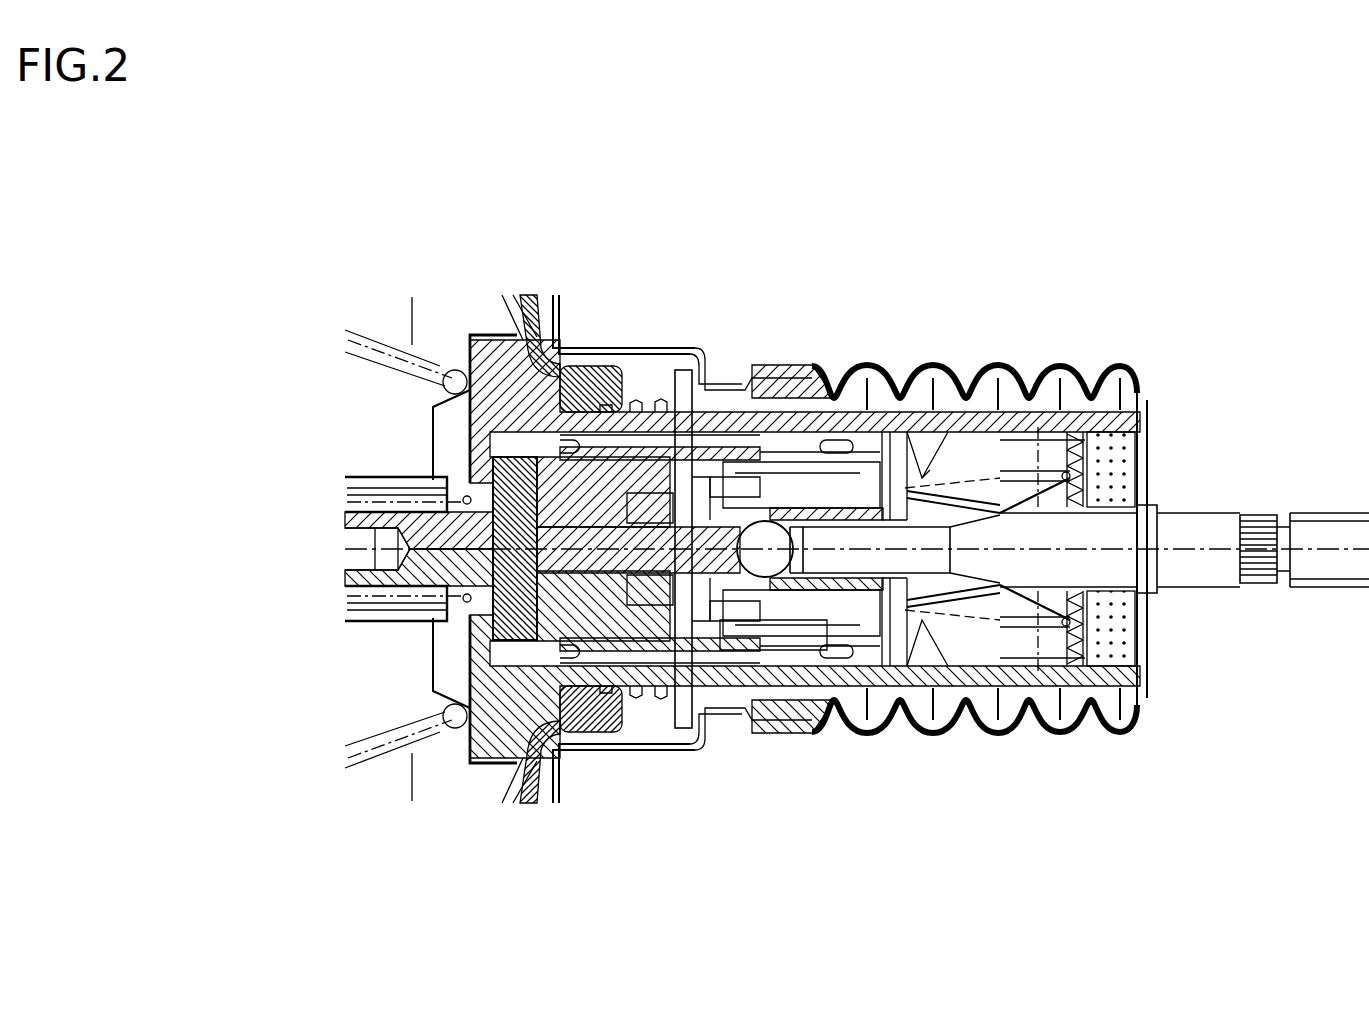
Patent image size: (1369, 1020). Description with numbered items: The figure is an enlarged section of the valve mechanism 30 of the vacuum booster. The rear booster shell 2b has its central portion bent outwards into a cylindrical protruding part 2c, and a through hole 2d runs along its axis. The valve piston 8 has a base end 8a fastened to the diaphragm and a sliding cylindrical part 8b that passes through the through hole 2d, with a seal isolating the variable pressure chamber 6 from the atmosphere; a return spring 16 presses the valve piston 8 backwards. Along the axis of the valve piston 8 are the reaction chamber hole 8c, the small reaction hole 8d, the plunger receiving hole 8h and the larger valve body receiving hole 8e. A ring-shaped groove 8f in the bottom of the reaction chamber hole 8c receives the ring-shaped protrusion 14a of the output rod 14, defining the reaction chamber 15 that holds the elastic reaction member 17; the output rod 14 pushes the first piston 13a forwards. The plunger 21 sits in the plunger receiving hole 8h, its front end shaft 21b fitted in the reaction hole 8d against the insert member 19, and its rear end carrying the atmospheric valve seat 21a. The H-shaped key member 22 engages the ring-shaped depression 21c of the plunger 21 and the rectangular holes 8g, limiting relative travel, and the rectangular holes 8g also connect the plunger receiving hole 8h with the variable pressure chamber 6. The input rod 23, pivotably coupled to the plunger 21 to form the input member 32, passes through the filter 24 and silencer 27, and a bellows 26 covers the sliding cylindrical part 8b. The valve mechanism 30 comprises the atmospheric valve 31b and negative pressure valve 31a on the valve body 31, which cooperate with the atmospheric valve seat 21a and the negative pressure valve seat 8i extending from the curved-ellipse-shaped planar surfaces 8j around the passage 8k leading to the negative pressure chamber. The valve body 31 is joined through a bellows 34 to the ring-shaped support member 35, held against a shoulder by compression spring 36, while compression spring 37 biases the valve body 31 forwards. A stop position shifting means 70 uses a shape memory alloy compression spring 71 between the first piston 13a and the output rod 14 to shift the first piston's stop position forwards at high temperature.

The rear booster shell 2b is at (557, 307).
The protruding part 2c is at (627, 347).
The through hole 2d is at (728, 355).
The variable pressure chamber 6 is at (537, 787).
The valve piston 8 is at (467, 337).
The base end 8a is at (507, 740).
The sliding cylindrical part 8b is at (977, 717).
The reaction chamber hole 8c is at (493, 337).
The reaction hole 8d is at (347, 593).
The valve body receiving hole 8e is at (943, 710).
The ring-shaped groove 8f is at (580, 760).
The rectangular holes 8g is at (723, 753).
The plunger receiving hole 8h is at (813, 760).
The negative pressure valve seat 8i is at (870, 393).
The curved-ellipse-shaped planar surfaces 8j is at (837, 397).
The passage 8k is at (780, 440).
The first piston 13a is at (367, 480).
The output rod 14 is at (347, 542).
The ring-shaped protrusion 14a is at (457, 763).
The reaction chamber 15 is at (475, 630).
The return spring 16 is at (370, 330).
The reaction member 17 is at (433, 620).
The insert member 19 is at (545, 330).
The plunger 21 is at (643, 753).
The atmospheric valve seat 21a is at (863, 730).
The front end shaft 21b is at (580, 753).
The ring-shaped depression 21c is at (770, 760).
The key member 22 is at (683, 753).
The input rod 23 is at (1197, 520).
The filter 24 is at (1077, 720).
The bellows 26 is at (1133, 387).
The silencer 27 is at (1142, 637).
The valve mechanism 30 is at (937, 455).
The valve body 31 is at (910, 430).
The negative pressure valve 31a is at (885, 440).
The atmospheric valve 31b is at (897, 713).
The input member 32 is at (681, 480).
The bellows 34 is at (965, 468).
The support member 35 is at (985, 470).
The compression spring 36 is at (1060, 440).
The compression spring 37 is at (1010, 470).
The stop position shifting means 70 is at (423, 487).
The compression spring 71 is at (347, 497).